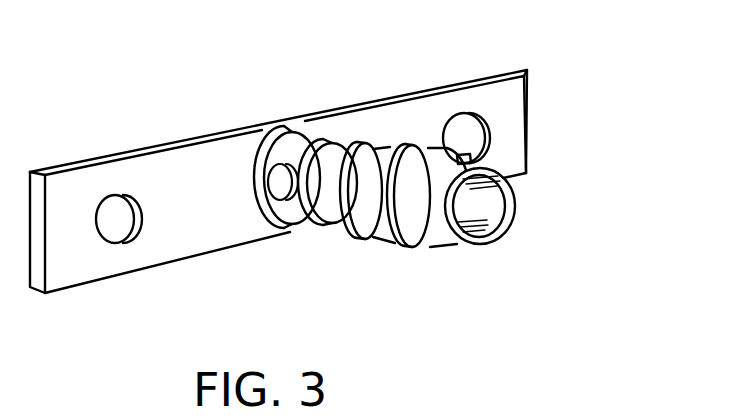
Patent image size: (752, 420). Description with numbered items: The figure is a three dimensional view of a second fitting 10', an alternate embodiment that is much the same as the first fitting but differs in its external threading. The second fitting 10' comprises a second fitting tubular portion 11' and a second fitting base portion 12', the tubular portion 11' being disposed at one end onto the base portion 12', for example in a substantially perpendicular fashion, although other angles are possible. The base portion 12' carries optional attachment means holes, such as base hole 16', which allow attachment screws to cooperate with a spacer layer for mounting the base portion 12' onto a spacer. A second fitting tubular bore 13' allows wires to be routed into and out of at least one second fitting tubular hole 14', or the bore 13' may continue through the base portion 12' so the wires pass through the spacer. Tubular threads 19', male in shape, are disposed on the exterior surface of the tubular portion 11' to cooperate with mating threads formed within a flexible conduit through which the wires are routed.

The second fitting 10' is at (476, 186).
The second fitting tubular portion 11' is at (434, 108).
The second fitting base portion 12' is at (278, 192).
The second fitting tubular bore 13' is at (521, 217).
The second fitting tubular hole 14' is at (235, 143).
The base hole 16' is at (102, 166).
The tubular threads 19' is at (388, 229).